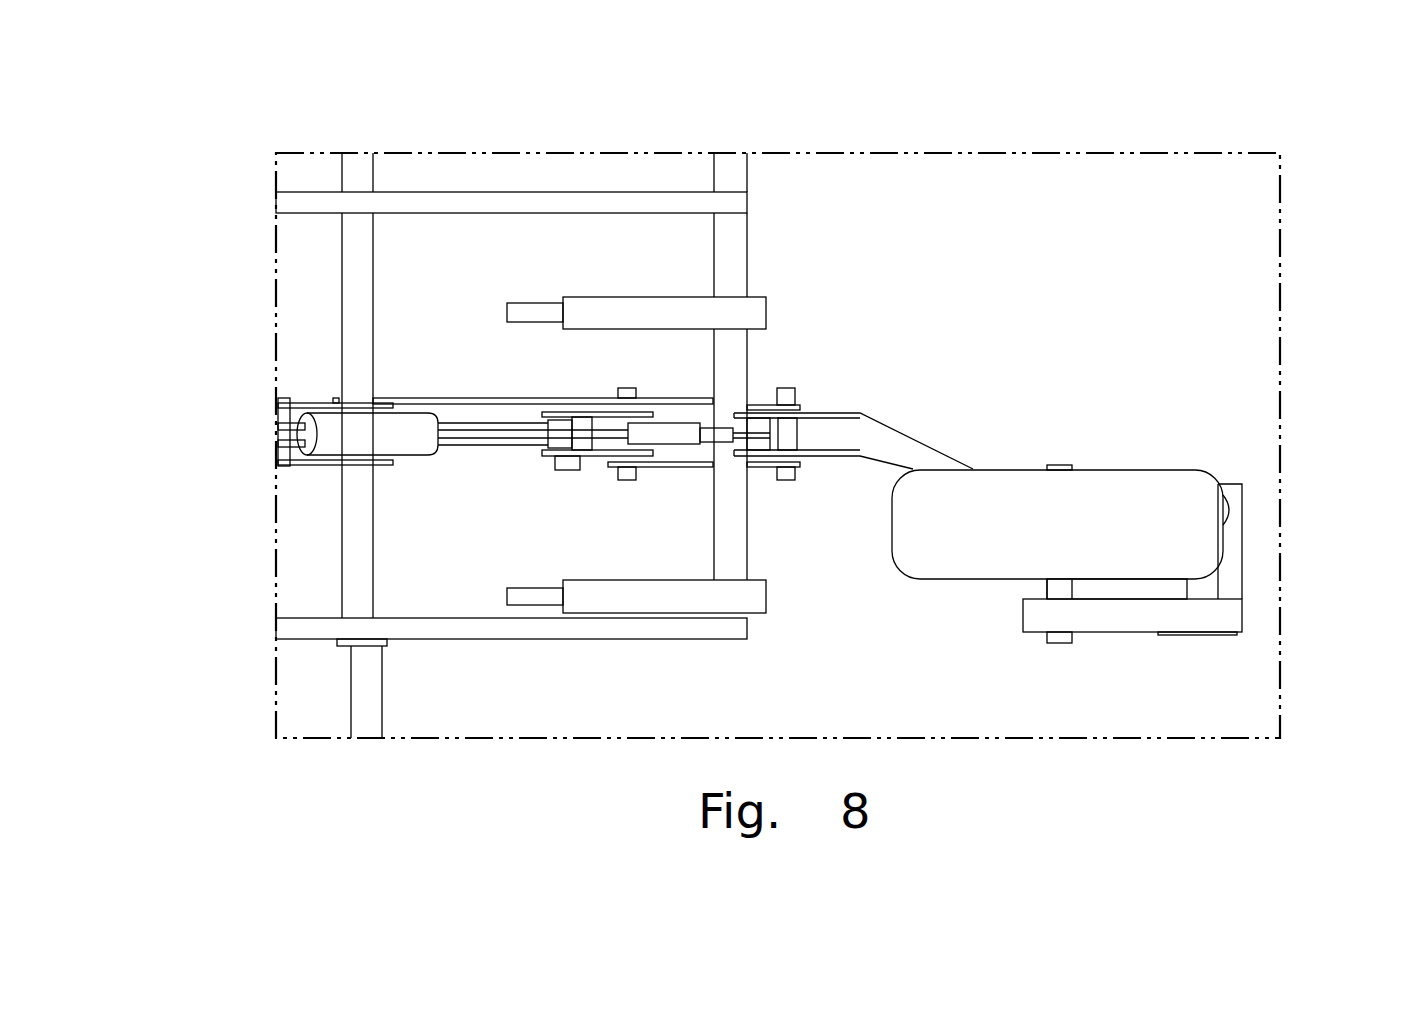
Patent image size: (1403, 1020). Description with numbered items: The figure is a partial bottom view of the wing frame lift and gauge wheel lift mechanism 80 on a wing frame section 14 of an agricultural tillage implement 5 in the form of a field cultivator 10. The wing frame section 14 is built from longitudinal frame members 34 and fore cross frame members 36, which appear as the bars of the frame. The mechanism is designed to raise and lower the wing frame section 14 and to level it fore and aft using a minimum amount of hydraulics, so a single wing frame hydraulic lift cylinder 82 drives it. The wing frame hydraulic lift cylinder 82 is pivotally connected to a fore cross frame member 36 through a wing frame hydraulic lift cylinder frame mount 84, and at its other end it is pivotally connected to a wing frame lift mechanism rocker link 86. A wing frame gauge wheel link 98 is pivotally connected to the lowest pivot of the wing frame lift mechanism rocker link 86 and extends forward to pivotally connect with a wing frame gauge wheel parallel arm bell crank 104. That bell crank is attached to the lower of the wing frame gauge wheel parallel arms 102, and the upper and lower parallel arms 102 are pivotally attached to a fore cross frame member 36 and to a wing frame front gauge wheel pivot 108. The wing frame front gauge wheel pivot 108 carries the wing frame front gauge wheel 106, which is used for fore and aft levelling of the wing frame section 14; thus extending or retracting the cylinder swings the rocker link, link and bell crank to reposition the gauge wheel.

The agricultural tillage implement 5 is at (631, 118).
The field cultivator 10 is at (719, 118).
The wing frame section 14 is at (747, 228).
The longitudinal frame members 34 is at (469, 192).
The fore cross frame members 36 is at (340, 312).
The wing frame lift and gauge wheel lift mechanism 80 is at (482, 445).
The wing frame hydraulic lift cylinder 82 is at (413, 455).
The wing frame hydraulic lift cylinder frame mount 84 is at (297, 463).
The wing frame lift mechanism rocker link 86 is at (593, 457).
The wing frame gauge wheel link 98 is at (673, 423).
The wing frame gauge wheel parallel arms 102 is at (905, 430).
The wing frame gauge wheel parallel arm bell crank 104 is at (817, 457).
The wing frame front gauge wheel 106 is at (1158, 470).
The wing frame front gauge wheel pivot 108 is at (1243, 513).